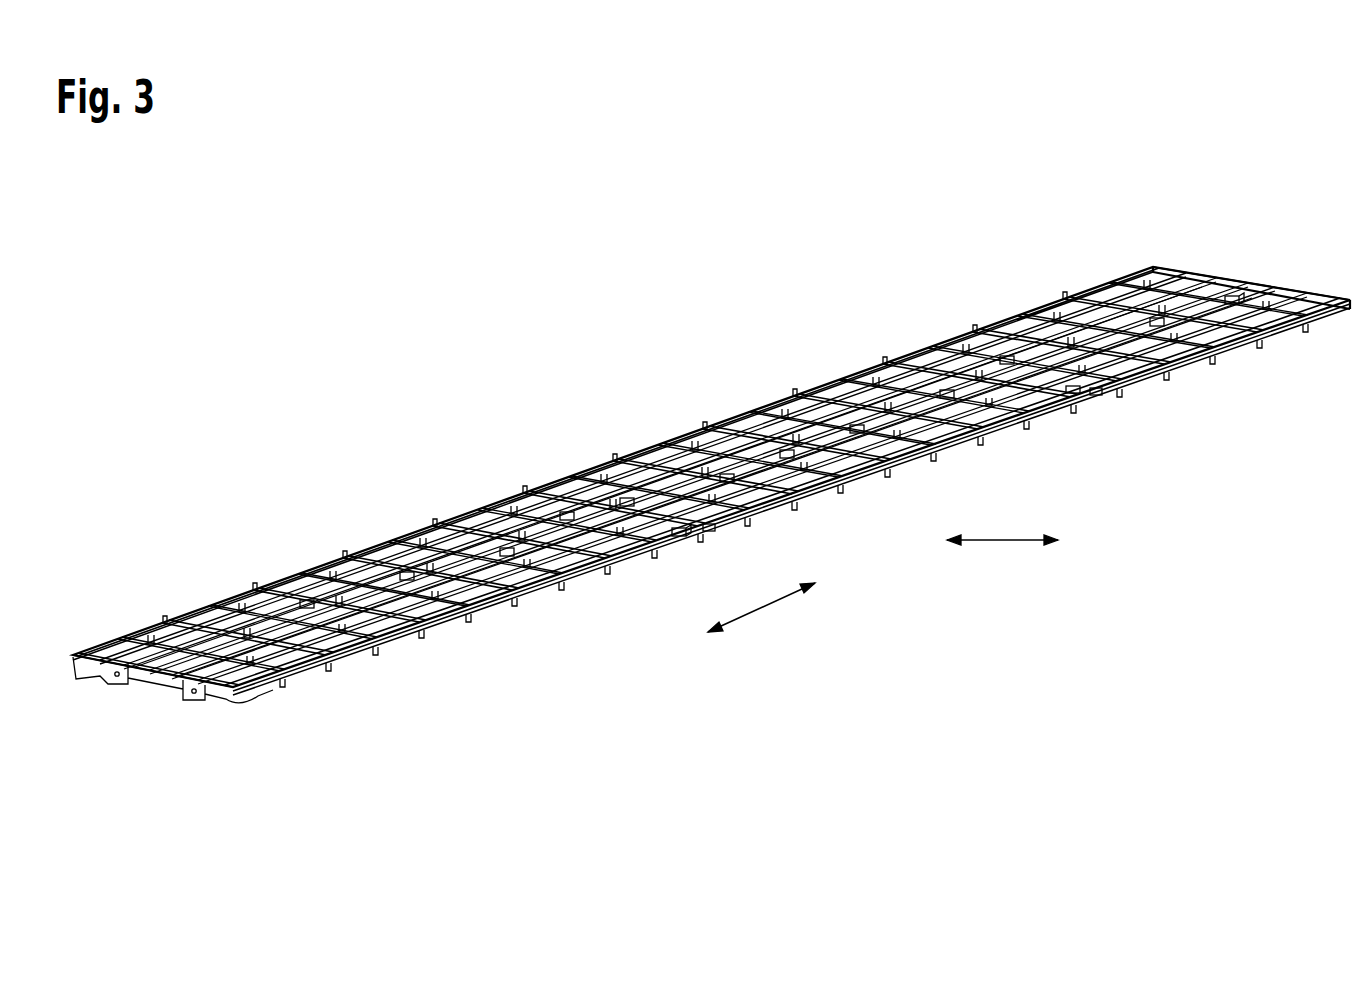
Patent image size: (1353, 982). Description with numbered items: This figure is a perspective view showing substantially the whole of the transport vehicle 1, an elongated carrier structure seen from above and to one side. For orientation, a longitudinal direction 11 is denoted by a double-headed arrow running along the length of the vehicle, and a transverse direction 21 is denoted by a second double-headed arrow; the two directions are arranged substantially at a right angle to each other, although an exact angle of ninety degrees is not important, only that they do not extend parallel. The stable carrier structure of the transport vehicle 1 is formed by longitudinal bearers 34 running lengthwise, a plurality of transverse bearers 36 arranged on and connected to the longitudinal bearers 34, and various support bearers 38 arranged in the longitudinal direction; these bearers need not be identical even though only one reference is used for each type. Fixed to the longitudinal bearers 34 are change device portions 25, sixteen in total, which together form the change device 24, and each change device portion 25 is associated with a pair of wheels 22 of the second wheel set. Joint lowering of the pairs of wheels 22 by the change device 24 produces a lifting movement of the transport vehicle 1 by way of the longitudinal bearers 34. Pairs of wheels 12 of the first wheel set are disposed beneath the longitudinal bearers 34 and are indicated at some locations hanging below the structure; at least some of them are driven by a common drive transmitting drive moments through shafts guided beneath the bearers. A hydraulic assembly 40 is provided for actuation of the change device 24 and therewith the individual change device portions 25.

The transport vehicle 1 is at (697, 286).
The longitudinal direction 11 is at (762, 610).
The pairs of wheels 12 is at (538, 595).
The transverse direction 21 is at (1005, 540).
The pair of wheels 22 is at (710, 535).
The change device 24 is at (683, 544).
The change device portion 25 is at (1232, 300).
The longitudinal bearers 34 is at (432, 570).
The transverse bearers 36 is at (327, 572).
The support bearers 38 is at (640, 553).
The hydraulic assembly 40 is at (572, 482).